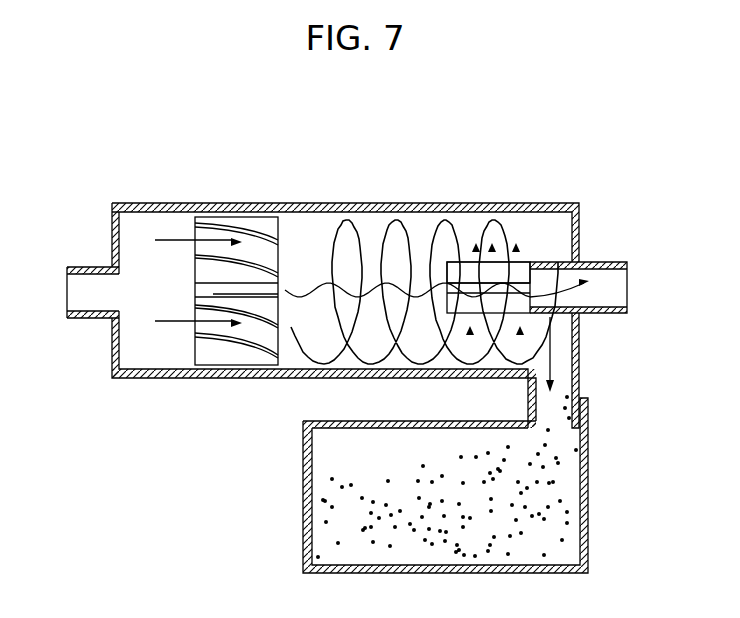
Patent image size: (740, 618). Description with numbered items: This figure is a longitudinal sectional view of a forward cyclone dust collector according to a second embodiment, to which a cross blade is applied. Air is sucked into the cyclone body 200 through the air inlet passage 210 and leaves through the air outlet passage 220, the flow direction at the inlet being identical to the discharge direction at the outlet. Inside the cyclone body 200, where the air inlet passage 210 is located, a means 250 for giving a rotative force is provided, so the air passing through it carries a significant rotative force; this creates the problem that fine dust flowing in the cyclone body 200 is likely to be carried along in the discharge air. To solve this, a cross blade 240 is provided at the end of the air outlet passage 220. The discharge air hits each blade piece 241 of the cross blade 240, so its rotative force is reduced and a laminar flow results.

The cyclone body 200 is at (304, 198).
The air inlet passage 210 is at (75, 267).
The air outlet passage 220 is at (607, 262).
The cross blade 240 is at (474, 355).
The blade piece 241 is at (453, 275).
The means for giving a rotative force 250 is at (188, 343).